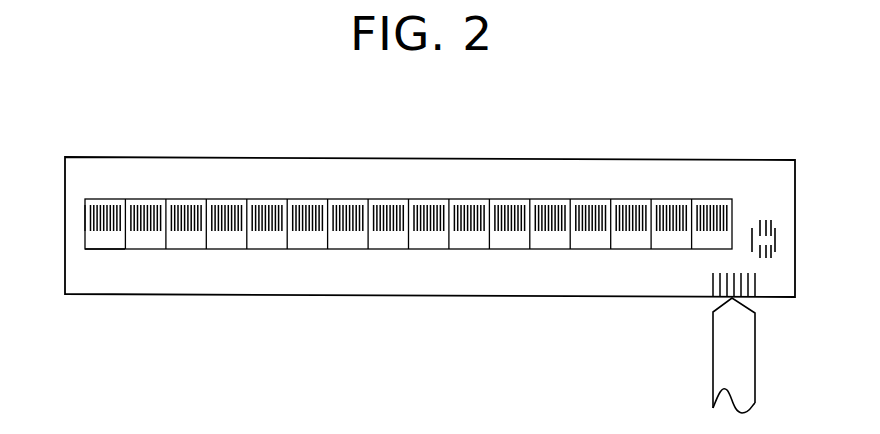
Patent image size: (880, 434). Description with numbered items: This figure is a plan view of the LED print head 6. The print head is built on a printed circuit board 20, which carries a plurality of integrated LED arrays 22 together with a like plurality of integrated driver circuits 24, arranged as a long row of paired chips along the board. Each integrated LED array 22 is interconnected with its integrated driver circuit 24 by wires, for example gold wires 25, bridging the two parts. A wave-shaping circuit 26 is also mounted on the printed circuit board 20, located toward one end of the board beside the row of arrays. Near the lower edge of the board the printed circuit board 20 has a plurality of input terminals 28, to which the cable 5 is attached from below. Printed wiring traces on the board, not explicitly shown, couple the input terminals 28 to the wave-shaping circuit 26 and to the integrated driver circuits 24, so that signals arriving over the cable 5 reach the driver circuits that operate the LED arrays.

The cable 5 is at (714, 355).
The LED print head 6 is at (680, 148).
The printed circuit board 20 is at (410, 157).
The integrated LED arrays 22 is at (562, 202).
The integrated driver circuits 24 is at (102, 245).
The gold wires 25 is at (88, 218).
The wave-shaping circuit 26 is at (768, 217).
The input terminals 28 is at (703, 282).